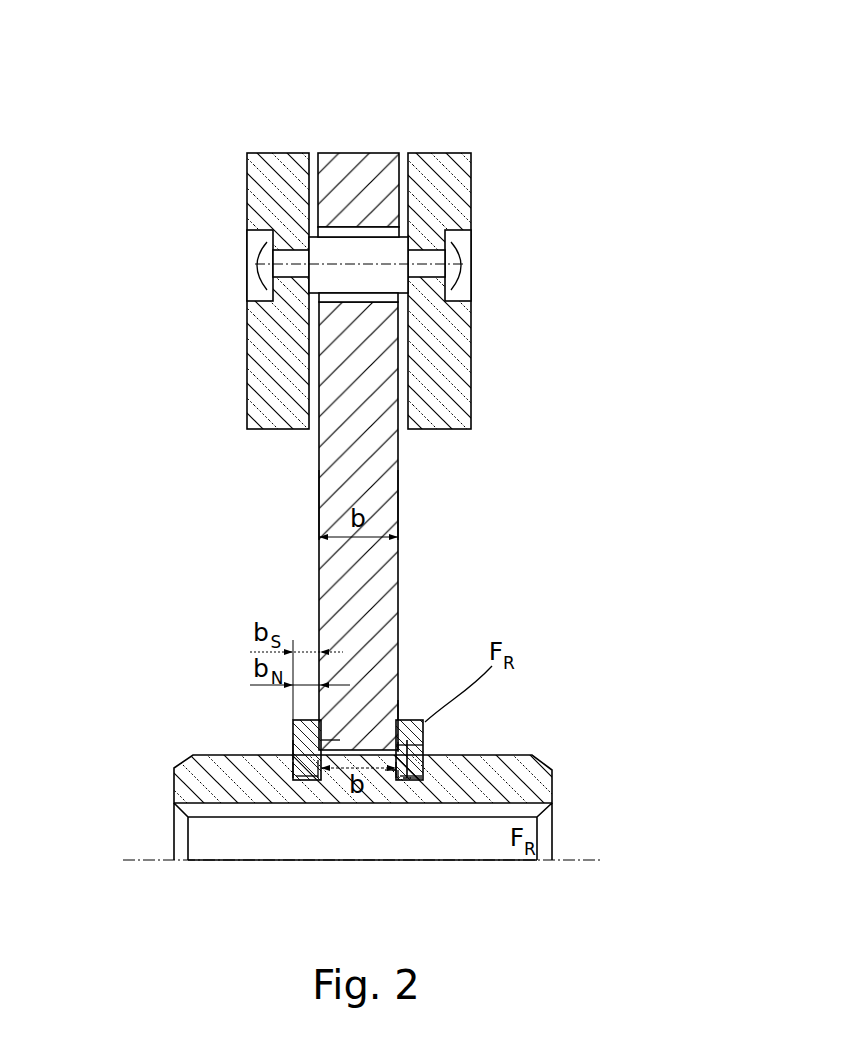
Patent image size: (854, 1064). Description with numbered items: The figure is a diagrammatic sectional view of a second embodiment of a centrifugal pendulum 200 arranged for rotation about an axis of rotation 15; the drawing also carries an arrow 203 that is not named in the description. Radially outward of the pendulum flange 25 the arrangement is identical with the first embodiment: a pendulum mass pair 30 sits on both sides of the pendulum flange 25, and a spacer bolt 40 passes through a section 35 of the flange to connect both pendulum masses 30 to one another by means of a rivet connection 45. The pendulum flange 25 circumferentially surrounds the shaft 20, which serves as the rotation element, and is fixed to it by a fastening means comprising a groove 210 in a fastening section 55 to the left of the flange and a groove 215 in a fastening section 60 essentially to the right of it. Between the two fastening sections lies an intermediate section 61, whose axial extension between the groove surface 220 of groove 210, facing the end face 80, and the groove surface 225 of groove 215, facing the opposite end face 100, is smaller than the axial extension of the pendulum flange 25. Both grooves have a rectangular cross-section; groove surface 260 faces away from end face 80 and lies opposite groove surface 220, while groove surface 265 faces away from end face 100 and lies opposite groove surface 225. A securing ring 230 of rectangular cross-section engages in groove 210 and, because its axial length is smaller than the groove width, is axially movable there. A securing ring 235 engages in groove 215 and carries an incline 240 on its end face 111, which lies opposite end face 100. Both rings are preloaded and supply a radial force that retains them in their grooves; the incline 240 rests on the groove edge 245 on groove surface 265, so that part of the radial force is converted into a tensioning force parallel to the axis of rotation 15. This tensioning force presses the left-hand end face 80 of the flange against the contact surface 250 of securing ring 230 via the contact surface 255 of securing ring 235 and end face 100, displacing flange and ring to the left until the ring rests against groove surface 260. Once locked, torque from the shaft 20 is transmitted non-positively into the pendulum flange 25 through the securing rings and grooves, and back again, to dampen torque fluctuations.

The axis of rotation 15 is at (593, 858).
The shaft 20 is at (537, 758).
The pendulum flange 25 is at (377, 477).
The pendulum mass pair 30 is at (262, 394).
The section 35 is at (376, 236).
The spacer bolt 40 is at (393, 247).
The rivet connection 45 is at (261, 272).
The fastening section 55 is at (314, 788).
The fastening section 60 is at (393, 782).
The intermediate section 61 is at (393, 775).
The end face 80 is at (316, 508).
The end face 100 is at (413, 507).
The end face 111 is at (427, 745).
The centrifugal pendulum 200 is at (471, 85).
The direction of movement 203 is at (432, 686).
The groove 210 is at (300, 781).
The groove 215 is at (411, 779).
The groove surface 220 is at (398, 706).
The groove surface 225 is at (405, 782).
The securing ring 230 is at (293, 733).
The securing ring 235 is at (424, 737).
The incline 240 is at (425, 755).
The groove edge 245 is at (425, 758).
The contact surface 250 is at (330, 748).
The contact surface 255 is at (293, 770).
The groove surface 260 is at (290, 746).
The groove surface 265 is at (421, 780).